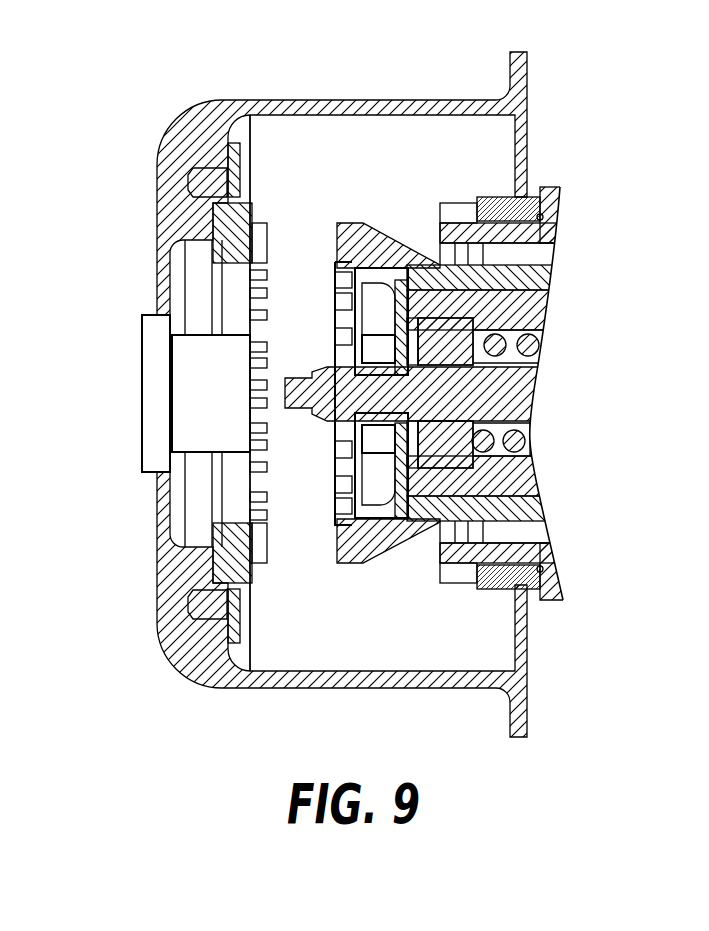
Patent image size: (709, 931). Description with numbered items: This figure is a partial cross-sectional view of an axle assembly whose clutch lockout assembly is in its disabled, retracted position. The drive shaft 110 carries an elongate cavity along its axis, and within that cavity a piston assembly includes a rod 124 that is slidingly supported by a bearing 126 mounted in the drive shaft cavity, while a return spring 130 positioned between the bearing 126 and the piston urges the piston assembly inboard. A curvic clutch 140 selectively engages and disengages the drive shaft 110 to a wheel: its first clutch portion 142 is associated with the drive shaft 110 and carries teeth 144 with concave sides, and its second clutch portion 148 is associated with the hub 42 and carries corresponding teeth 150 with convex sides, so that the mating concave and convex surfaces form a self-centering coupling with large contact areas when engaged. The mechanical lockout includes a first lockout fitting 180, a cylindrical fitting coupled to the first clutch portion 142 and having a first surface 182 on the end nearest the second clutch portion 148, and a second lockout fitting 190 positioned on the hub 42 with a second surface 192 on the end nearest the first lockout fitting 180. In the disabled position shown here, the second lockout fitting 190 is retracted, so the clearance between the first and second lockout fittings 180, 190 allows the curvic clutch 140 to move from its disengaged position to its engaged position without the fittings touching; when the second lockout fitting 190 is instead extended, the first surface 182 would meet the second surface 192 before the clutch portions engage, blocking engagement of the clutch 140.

The hub 42 is at (408, 689).
The drive shaft 110 is at (547, 303).
The rod 124 is at (530, 395).
The bearing 126 is at (528, 477).
The return spring 130 is at (523, 440).
The curvic clutch 140 is at (313, 564).
The first clutch portion 142 is at (387, 230).
The teeth 144 is at (337, 266).
The second clutch portion 148 is at (243, 488).
The teeth 150 is at (289, 265).
The first lockout fitting 180 is at (373, 340).
The first surface 182 is at (342, 352).
The second lockout fitting 190 is at (142, 387).
The second surface 192 is at (256, 412).